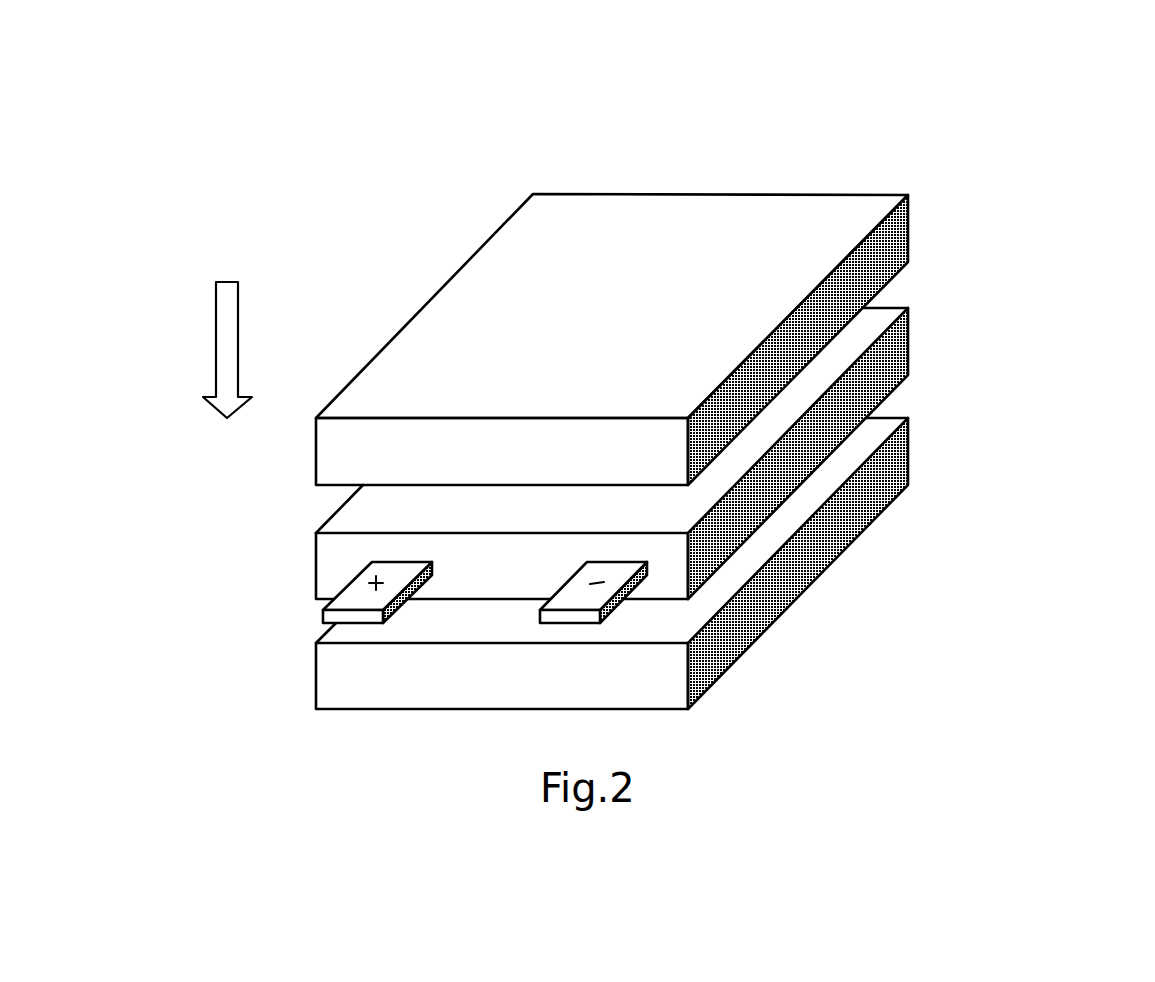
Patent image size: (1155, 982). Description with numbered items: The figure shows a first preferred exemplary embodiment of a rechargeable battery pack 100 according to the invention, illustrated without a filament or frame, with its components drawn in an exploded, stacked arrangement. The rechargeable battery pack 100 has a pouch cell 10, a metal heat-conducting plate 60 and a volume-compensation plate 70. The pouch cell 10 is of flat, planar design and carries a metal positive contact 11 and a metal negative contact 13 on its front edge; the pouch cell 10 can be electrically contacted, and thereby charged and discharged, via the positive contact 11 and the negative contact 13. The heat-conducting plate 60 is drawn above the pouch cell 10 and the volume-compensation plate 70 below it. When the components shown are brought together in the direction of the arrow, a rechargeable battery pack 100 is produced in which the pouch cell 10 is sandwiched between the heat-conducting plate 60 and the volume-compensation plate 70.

The rechargeable battery pack 100 is at (1055, 134).
The heat-conducting plate 60 is at (853, 210).
The pouch cell 10 is at (897, 350).
The volume-compensation plate 70 is at (895, 475).
The positive contact 11 is at (342, 617).
The negative contact 13 is at (550, 617).